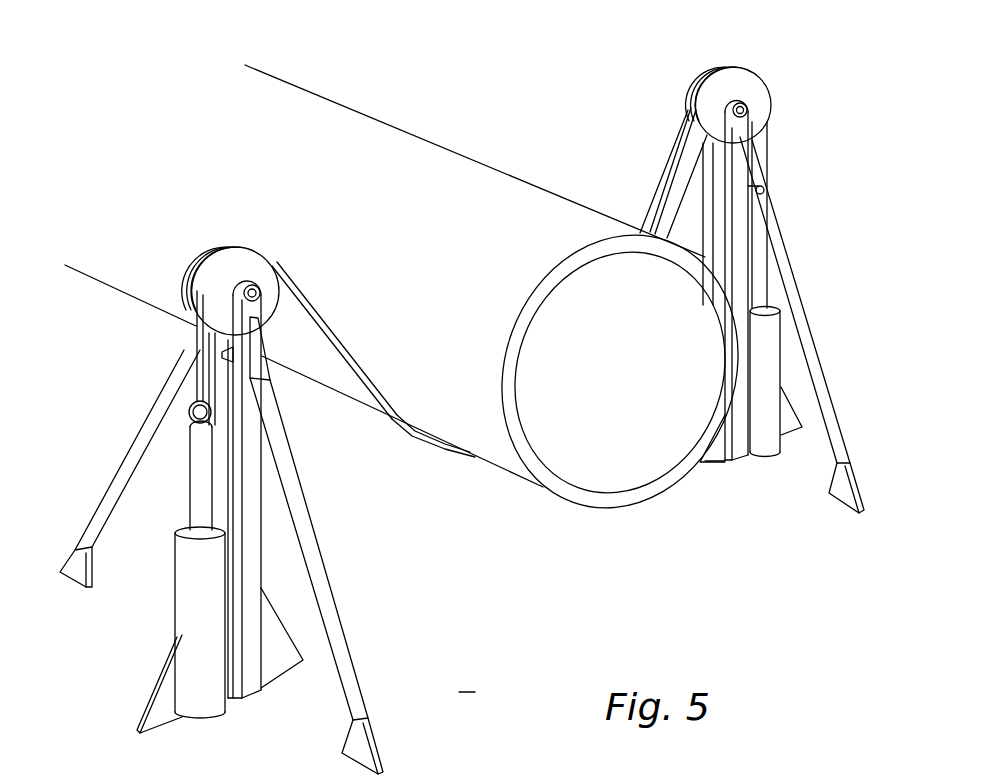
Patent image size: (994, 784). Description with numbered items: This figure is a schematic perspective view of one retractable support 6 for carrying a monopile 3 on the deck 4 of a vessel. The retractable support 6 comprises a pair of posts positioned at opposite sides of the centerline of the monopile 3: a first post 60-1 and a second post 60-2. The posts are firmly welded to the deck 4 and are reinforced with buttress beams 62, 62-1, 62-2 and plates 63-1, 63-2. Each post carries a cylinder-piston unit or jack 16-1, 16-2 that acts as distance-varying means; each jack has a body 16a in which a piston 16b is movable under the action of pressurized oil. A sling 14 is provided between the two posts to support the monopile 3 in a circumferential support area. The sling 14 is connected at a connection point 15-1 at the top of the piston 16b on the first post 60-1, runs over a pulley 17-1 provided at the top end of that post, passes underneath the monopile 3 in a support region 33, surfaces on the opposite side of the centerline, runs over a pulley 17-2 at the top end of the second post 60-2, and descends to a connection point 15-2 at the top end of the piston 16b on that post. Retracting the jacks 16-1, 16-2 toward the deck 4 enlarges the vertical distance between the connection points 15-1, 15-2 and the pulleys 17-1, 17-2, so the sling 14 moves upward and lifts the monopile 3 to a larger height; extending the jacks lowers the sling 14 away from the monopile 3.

The monopile 3 is at (390, 150).
The deck 4 is at (467, 681).
The retractable support 6 is at (479, 390).
The sling 14 is at (332, 338).
The connection point 15-1 is at (190, 404).
The connection point 15-2 is at (764, 200).
The cylinder-piston unit 16-1 is at (146, 569).
The cylinder-piston unit 16-2 is at (788, 363).
The body 16a is at (185, 577).
The piston 16b is at (195, 497).
The pulley 17-1 is at (256, 262).
The pulley 17-2 is at (742, 92).
The strap portion under pipe 33 is at (427, 422).
The first post 60-1 is at (261, 695).
The second post 60-2 is at (740, 460).
The buttress beam 62 is at (120, 478).
The buttress beam 62-1 is at (335, 520).
The buttress beam 62-2 is at (668, 165).
The plate 63-1 is at (274, 663).
The plate 63-2 is at (789, 424).